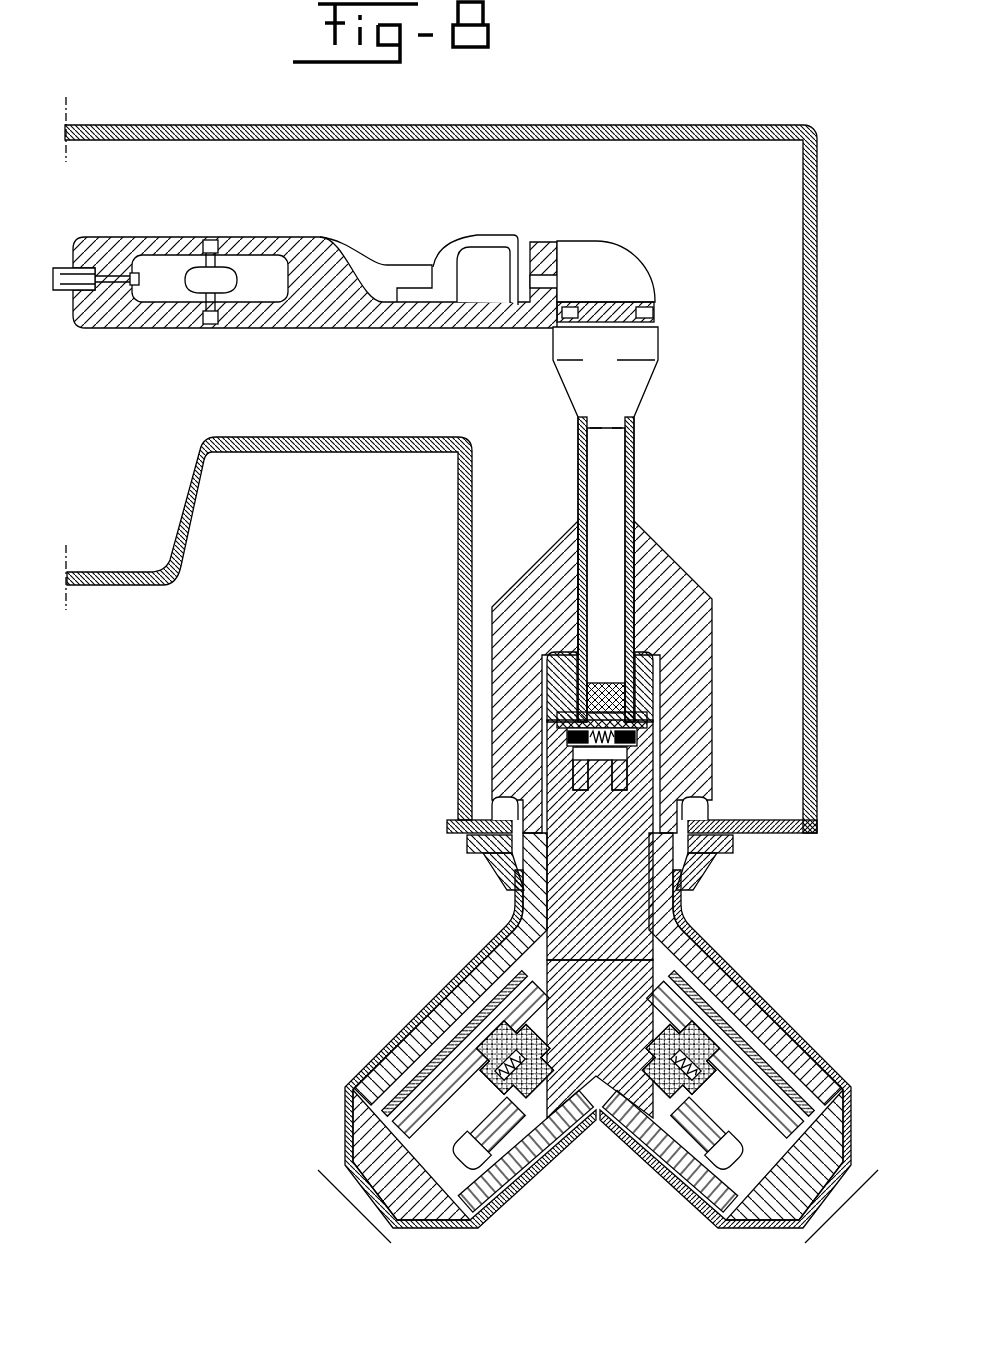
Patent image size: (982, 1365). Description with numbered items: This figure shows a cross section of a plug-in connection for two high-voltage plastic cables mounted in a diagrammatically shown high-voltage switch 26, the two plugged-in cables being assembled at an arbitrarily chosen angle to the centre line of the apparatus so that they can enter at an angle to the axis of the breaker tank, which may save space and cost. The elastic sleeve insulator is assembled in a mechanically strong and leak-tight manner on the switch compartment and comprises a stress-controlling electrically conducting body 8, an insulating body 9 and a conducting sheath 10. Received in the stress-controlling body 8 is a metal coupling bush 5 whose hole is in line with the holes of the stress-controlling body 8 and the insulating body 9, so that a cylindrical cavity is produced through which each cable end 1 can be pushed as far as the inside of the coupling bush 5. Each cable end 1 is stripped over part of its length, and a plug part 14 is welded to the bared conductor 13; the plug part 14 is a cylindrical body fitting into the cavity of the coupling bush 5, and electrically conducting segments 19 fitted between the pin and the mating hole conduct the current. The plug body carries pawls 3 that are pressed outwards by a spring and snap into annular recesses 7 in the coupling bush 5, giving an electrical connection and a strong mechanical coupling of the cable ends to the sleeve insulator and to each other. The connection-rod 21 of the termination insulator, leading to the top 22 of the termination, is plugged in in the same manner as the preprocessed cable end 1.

The cable end 1 is at (387, 1118).
The pawl 3 is at (637, 740).
The coupling bush 5 is at (583, 887).
The annular recess 7 is at (557, 728).
The stress-controlling electrically conducting body 8 is at (552, 670).
The insulating body 9 is at (540, 585).
The conducting sheath 10 is at (488, 948).
The bared conductor 13 is at (455, 1100).
The plug part 14 is at (575, 780).
The electrically conducting segments 19 is at (505, 812).
The connection-rod 21 is at (600, 497).
The top of the termination 22 is at (612, 262).
The high-voltage switch 26 is at (180, 126).